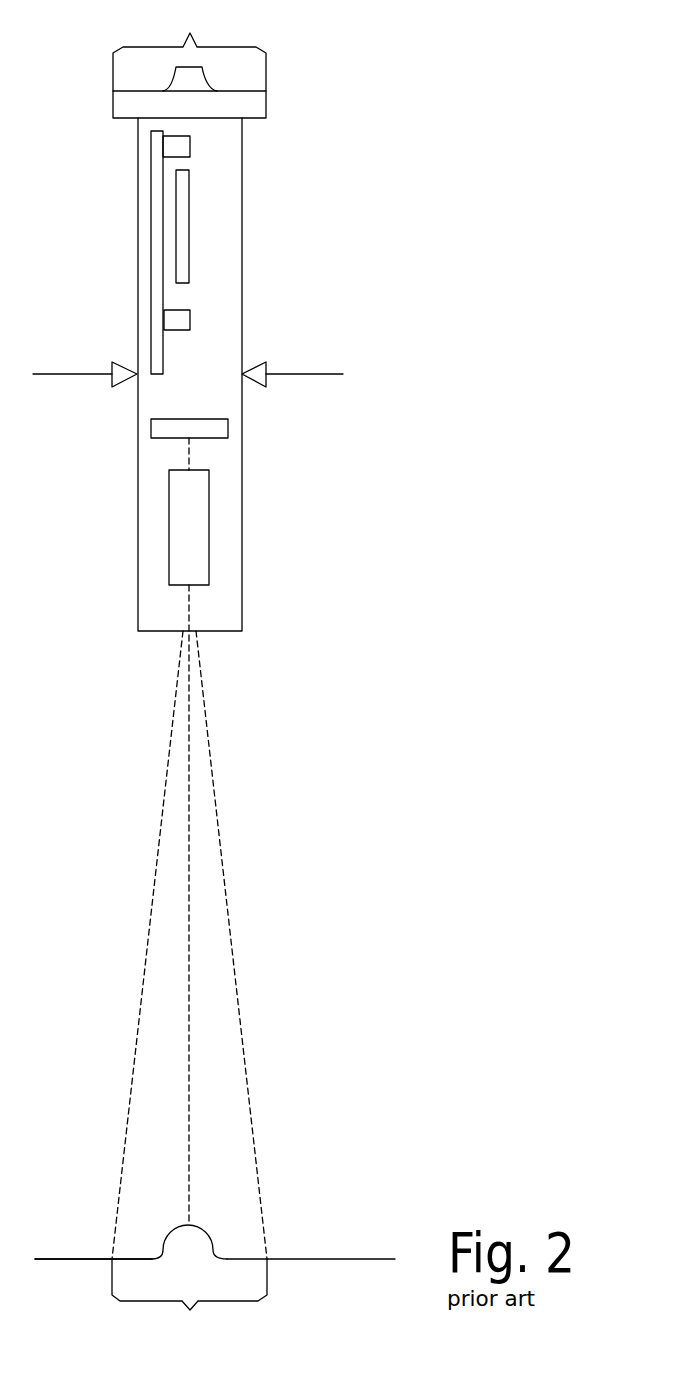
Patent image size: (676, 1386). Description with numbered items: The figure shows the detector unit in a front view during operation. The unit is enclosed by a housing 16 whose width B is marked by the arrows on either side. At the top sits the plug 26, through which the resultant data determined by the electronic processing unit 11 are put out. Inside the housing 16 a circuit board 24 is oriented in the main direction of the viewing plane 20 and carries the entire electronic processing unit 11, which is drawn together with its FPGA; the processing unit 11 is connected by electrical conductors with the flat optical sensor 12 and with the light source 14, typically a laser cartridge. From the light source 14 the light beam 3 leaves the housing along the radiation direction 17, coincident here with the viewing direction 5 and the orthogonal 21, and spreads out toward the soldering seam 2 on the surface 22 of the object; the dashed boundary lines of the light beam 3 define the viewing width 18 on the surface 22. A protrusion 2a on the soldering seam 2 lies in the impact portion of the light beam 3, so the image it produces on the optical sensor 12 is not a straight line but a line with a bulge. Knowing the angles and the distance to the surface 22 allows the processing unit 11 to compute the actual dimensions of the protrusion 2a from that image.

The housing 16 is at (240, 323).
The width B is at (189, 47).
The plug 26 is at (188, 79).
The circuit board 24 is at (157, 348).
The FPGA processing unit FPGA is at (182, 214).
The electronic processing unit 11 is at (190, 303).
The optical sensor 12 is at (215, 432).
The light source 14 is at (195, 541).
The viewing plane 20 is at (303, 831).
The viewing direction 5 is at (303, 831).
The radiation direction 17 is at (303, 831).
The orthogonal 21 is at (189, 721).
The light beam 3 is at (144, 977).
The soldering seam 2 is at (343, 1259).
The surface 22 is at (73, 1259).
The protrusion 2a is at (202, 1242).
The viewing width 18 is at (189, 1301).